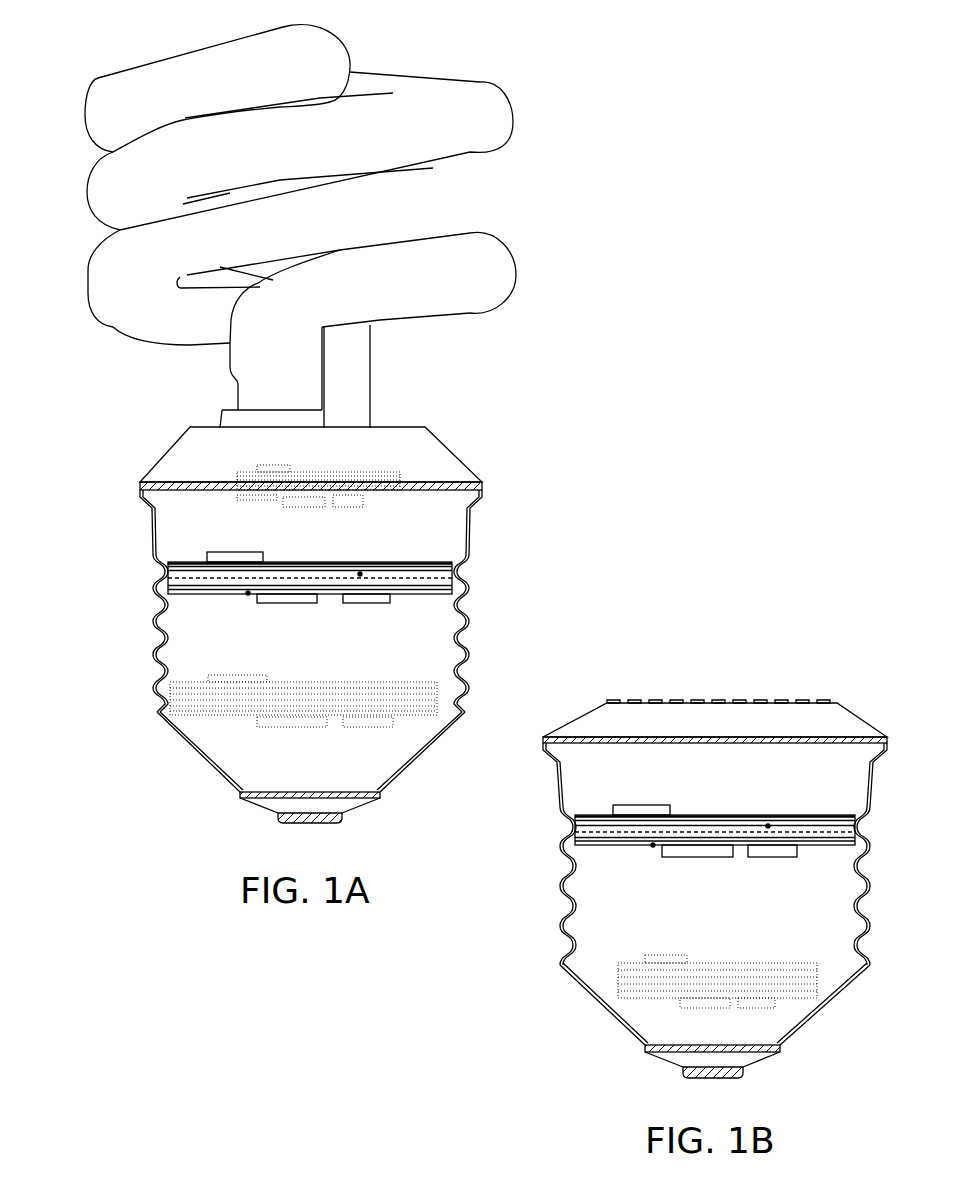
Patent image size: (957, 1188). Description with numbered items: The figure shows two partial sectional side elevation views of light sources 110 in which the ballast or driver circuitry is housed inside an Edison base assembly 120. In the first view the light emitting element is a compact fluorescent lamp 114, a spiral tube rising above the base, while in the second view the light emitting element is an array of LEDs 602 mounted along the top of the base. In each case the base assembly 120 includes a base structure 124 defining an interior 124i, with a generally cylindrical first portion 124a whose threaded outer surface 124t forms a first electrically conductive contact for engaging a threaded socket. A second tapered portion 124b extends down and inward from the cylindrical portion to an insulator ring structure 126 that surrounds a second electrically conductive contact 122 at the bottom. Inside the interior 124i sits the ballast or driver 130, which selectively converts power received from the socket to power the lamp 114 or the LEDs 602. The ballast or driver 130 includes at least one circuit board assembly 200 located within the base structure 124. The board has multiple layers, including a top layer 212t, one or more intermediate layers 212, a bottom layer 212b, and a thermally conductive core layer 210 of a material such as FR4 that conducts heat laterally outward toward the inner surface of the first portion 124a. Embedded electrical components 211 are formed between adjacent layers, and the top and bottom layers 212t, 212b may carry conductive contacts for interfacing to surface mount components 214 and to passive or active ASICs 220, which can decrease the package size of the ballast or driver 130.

In FIG. 1A, the light source 110 is at (160, 45).
In FIG. 1B, the light source 110 is at (800, 638).
In FIG. 1A, the lamp 114 is at (505, 248).
In FIG. 1A, the Edison base assembly 120 is at (142, 808).
In FIG. 1B, the Edison base assembly 120 is at (518, 1028).
In FIG. 1A, the second electrically conductive contact 122 is at (276, 815).
In FIG. 1B, the second electrically conductive contact 122 is at (683, 1073).
In FIG. 1A, the base structure 124 is at (470, 627).
In FIG. 1A, the first portion 124a is at (125, 507).
In FIG. 1B, the first portion 124a is at (509, 757).
In FIG. 1A, the second tapered portion 124b is at (145, 713).
In FIG. 1B, the second tapered portion 124b is at (545, 963).
In FIG. 1A, the threaded outer surface 124t is at (467, 597).
In FIG. 1B, the threaded outer surface 124t is at (565, 871).
In FIG. 1A, the interior 124i is at (437, 660).
In FIG. 1B, the interior 124i is at (580, 921).
In FIG. 1A, the insulator ring structure 126 is at (355, 803).
In FIG. 1B, the insulator ring structure 126 is at (760, 1060).
In FIG. 1A, the ballast or driver 130 is at (480, 553).
In FIG. 1B, the ballast or driver 130 is at (808, 772).
In FIG. 1A, the circuit board assembly 200 is at (222, 535).
In FIG. 1B, the circuit board assembly 200 is at (627, 787).
In FIG. 1A, the core layer 210 is at (168, 577).
In FIG. 1B, the core layer 210 is at (575, 831).
In FIG. 1A, the embedded electrical component 211 is at (360, 571).
In FIG. 1B, the embedded electrical component 211 is at (766, 823).
In FIG. 1A, the intermediate layer 212 is at (373, 562).
In FIG. 1B, the intermediate layer 212 is at (775, 822).
In FIG. 1A, the top layer 212t is at (295, 562).
In FIG. 1B, the top layer 212t is at (702, 815).
In FIG. 1A, the bottom layer 212b is at (233, 594).
In FIG. 1B, the bottom layer 212b is at (637, 847).
In FIG. 1A, the surface mount component 214 is at (372, 603).
In FIG. 1B, the surface mount component 214 is at (772, 858).
In FIG. 1A, the ASIC 220 is at (242, 552).
In FIG. 1B, the ASIC 220 is at (643, 805).
In FIG. 1B, the LED 602 is at (627, 702).